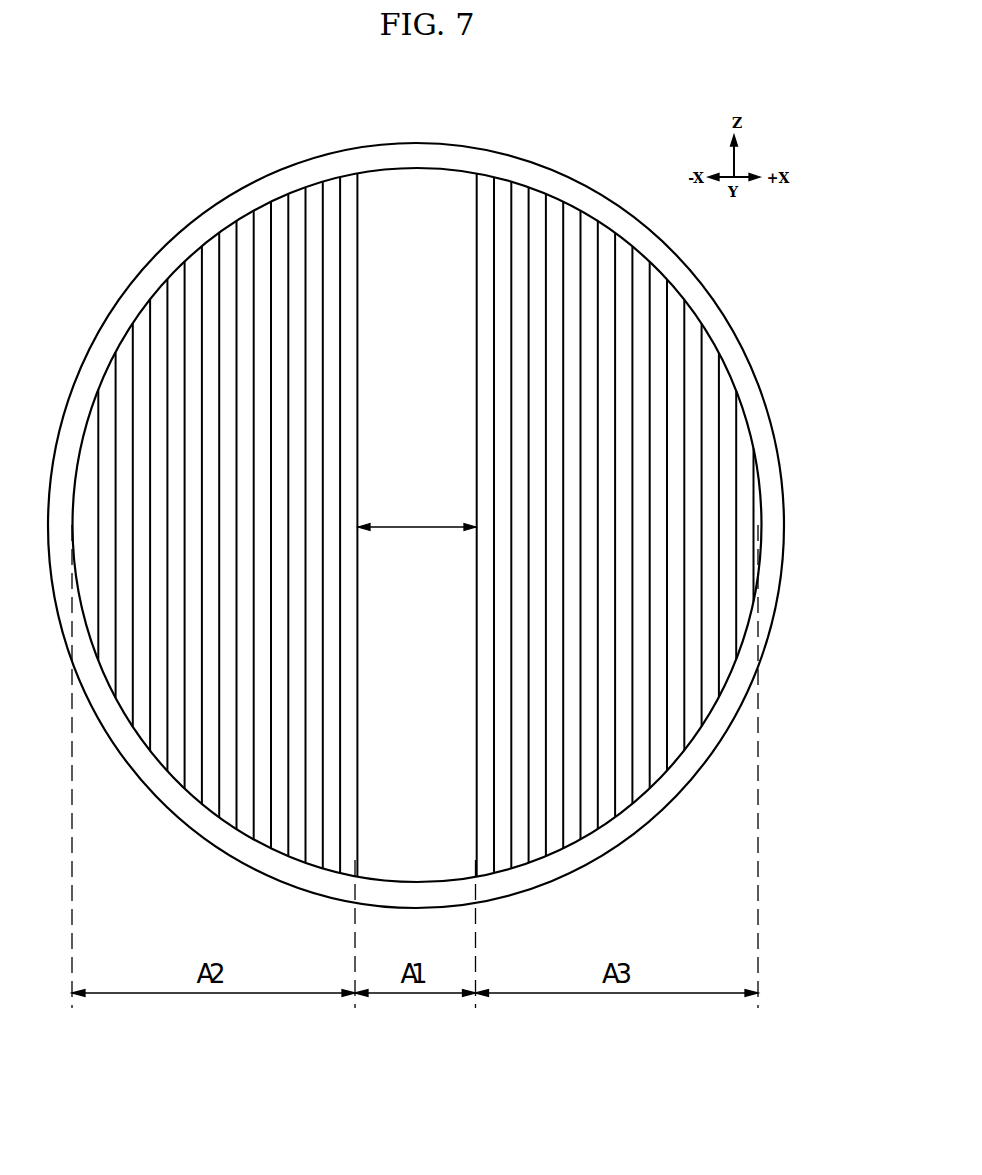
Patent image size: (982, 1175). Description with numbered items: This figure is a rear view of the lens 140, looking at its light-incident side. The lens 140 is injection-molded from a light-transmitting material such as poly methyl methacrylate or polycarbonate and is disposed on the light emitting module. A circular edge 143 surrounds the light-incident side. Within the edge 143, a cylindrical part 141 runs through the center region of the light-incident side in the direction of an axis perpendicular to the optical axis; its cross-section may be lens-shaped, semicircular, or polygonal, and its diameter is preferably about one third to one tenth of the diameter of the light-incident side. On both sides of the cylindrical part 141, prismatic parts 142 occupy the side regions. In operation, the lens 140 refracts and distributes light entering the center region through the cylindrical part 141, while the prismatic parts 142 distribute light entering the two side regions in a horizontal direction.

The lens 140 is at (135, 123).
The cylindrical part 141 is at (421, 203).
The prismatic parts 142 is at (607, 253).
The edge 143 is at (739, 337).